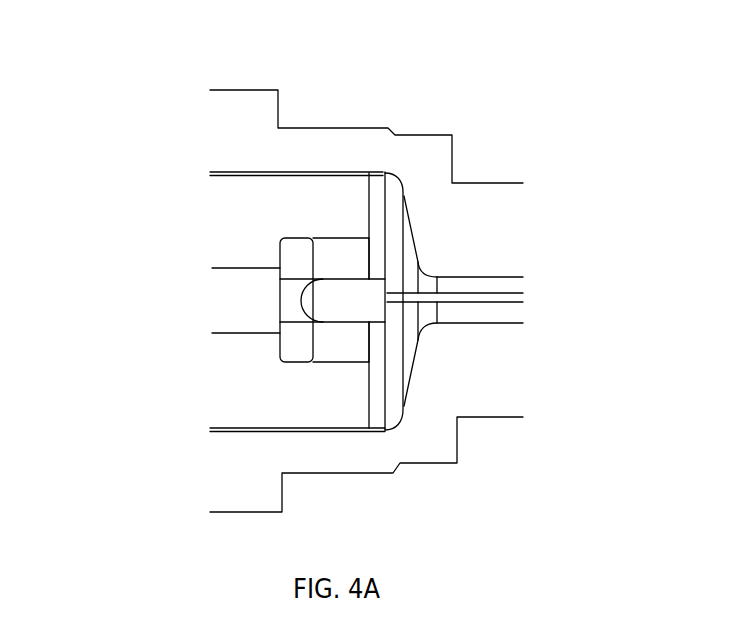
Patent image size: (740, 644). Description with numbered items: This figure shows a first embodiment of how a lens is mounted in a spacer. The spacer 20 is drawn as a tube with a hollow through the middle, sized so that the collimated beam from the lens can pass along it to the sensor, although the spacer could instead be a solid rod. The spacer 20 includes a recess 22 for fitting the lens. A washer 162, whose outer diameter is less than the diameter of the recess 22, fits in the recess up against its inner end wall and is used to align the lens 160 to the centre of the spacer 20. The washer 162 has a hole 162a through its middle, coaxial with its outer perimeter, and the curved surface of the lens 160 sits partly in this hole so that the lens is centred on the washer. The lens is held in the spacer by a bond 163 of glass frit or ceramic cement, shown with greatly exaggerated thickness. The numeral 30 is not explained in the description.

The spacer 20 is at (257, 227).
The recess 22 is at (338, 365).
The needle 30 is at (515, 292).
The lens 160 is at (348, 300).
The washer 162 is at (297, 257).
The hole 162a is at (280, 297).
The bond 163 is at (337, 255).